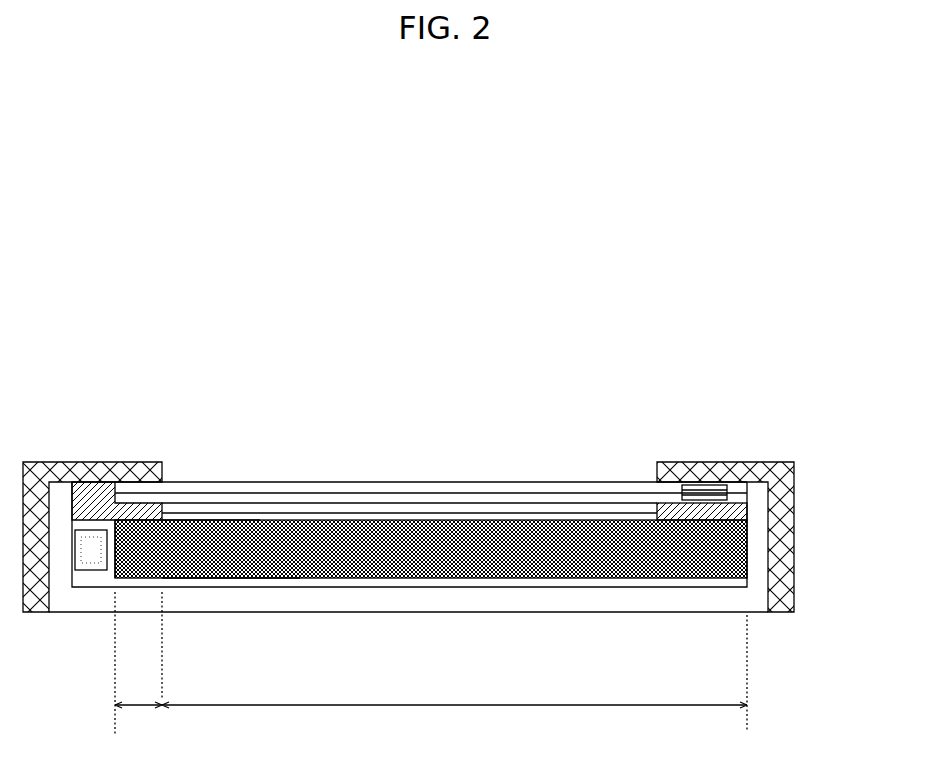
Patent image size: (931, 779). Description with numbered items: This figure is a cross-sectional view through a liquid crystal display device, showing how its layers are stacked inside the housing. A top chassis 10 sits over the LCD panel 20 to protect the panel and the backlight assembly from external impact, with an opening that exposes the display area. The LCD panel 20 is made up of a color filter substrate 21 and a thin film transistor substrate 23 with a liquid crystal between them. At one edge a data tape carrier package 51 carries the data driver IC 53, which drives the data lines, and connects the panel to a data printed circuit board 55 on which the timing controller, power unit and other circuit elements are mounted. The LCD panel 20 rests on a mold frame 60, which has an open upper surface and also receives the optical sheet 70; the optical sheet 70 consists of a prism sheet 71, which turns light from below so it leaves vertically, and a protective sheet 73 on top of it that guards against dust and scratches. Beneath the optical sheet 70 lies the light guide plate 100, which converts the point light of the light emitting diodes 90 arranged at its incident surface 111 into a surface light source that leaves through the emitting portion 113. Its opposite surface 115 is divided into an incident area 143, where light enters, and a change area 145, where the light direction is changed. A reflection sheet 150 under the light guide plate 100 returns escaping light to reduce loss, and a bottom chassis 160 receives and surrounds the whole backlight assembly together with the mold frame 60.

The top chassis 10 is at (794, 476).
The LCD panel 20 is at (431, 425).
The color filter substrate 21 is at (315, 493).
The thin film transistor substrate 23 is at (364, 500).
The optical sheet 70 is at (409, 432).
The prism sheet 71 is at (510, 500).
The protective sheet 73 is at (462, 493).
The data tape carrier package 51 is at (685, 490).
The data driver IC 53 is at (712, 494).
The data printed circuit board 55 is at (727, 498).
The mold frame 60 is at (745, 509).
The bottom chassis 160 is at (760, 599).
The light guide plate 100 is at (431, 605).
The incident surface 111 is at (120, 550).
The emitting portion 113 is at (207, 520).
The opposite surface 115 is at (155, 655).
The reflection sheet 150 is at (415, 583).
The light emitting diode 90 is at (92, 572).
The incident area 143 is at (138, 664).
The change area 145 is at (454, 675).